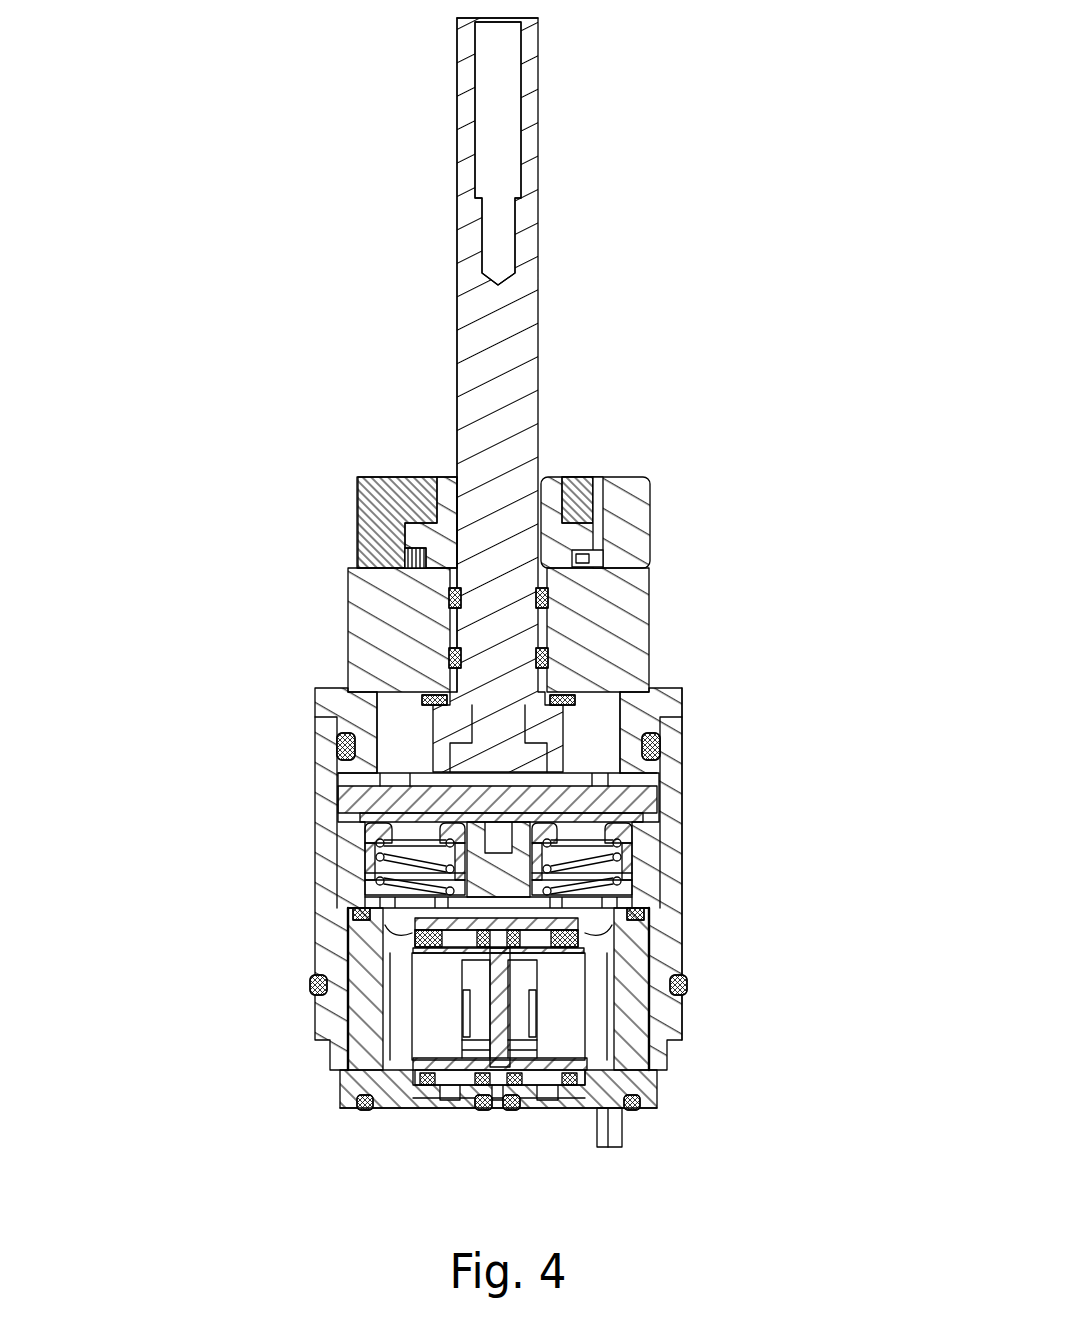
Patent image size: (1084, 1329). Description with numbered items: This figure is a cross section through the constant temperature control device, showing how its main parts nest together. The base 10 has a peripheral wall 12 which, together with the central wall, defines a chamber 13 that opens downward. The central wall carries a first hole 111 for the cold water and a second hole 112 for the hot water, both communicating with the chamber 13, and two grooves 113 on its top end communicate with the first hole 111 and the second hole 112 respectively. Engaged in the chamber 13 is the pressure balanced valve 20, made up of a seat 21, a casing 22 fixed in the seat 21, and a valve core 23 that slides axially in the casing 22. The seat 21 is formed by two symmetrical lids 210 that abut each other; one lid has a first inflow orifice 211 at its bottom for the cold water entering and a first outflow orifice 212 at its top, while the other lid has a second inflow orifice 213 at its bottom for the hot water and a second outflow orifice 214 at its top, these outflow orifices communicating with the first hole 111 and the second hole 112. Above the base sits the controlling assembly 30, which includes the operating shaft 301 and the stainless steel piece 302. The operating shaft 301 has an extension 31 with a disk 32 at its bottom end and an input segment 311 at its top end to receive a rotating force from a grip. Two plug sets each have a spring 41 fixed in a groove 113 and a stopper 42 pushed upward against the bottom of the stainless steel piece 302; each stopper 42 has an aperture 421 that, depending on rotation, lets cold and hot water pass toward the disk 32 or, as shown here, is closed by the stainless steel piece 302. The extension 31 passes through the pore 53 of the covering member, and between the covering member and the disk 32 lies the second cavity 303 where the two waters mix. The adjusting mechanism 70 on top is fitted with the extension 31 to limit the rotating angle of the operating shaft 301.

The base 10 is at (686, 720).
The peripheral wall 12 is at (673, 753).
The chamber 13 is at (362, 995).
The pressure balanced valve 20 is at (651, 1108).
The seat 21 is at (345, 1090).
The casing 22 is at (393, 1108).
The valve core 23 is at (590, 1022).
The controlling assembly 30 is at (540, 161).
The extension 31 is at (470, 241).
The disk 32 is at (641, 800).
The spring 41 is at (373, 862).
The stopper 42 is at (378, 841).
The pore 53 is at (455, 597).
The adjusting mechanism 70 is at (357, 500).
The first hole 111 is at (386, 905).
The second hole 112 is at (628, 917).
The groove 113 is at (382, 889).
The lid 210 is at (362, 1105).
The first inflow orifice 211 is at (433, 1095).
The first outflow orifice 212 is at (322, 985).
The second inflow orifice 213 is at (538, 1095).
The second outflow orifice 214 is at (649, 951).
The operating shaft 301 is at (457, 150).
The stainless steel piece 302 is at (645, 818).
The second cavity 303 is at (400, 700).
The input segment 311 is at (527, 19).
The aperture 421 is at (432, 832).